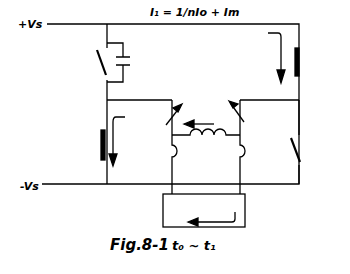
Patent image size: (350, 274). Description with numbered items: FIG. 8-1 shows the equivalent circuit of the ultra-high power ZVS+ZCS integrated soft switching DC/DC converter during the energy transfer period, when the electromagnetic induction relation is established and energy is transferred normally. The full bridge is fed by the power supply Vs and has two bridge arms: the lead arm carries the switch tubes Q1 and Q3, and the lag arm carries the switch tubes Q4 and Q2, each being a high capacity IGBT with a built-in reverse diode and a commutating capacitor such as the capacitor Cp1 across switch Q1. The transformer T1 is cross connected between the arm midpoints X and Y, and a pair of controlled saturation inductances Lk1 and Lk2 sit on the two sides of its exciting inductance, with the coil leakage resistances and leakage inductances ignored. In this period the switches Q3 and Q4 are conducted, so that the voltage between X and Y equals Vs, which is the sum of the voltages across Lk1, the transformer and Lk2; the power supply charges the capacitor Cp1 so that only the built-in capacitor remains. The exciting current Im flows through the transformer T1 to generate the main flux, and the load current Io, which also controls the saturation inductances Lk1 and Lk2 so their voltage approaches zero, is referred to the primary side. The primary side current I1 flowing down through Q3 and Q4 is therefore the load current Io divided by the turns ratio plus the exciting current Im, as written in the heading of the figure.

The switch tube Q1 is at (92, 62).
The switch tube Q2 is at (289, 142).
The switch tube Q3 is at (92, 145).
The switch tube Q4 is at (293, 62).
The commutating capacitor Cp1 is at (129, 62).
The controlled saturation inductance Lk1 is at (165, 117).
The controlled saturation inductance Lk2 is at (246, 117).
The transformer T1 is at (208, 159).
The exciting current Im is at (206, 122).
The primary side current I1 is at (197, 99).
The load current Io is at (204, 205).
The bridge midpoint node X is at (275, 100).
The bridge midpoint node Y is at (134, 100).